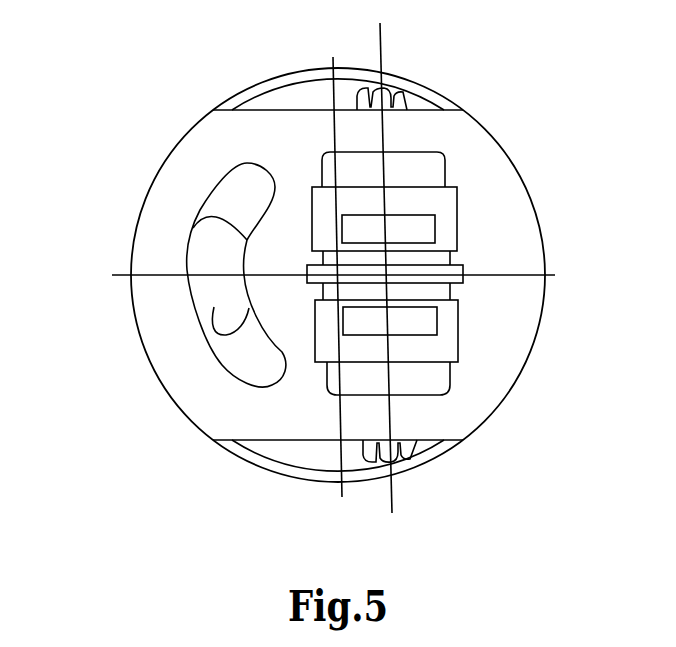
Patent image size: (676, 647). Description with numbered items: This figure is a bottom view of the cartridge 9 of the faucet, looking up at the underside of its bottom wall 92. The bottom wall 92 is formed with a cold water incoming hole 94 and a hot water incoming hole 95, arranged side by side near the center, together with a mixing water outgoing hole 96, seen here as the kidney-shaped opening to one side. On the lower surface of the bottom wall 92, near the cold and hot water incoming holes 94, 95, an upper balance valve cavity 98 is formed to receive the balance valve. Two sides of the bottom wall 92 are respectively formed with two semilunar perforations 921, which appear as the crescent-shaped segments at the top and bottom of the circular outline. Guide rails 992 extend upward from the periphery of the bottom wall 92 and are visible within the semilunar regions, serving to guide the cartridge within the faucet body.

The cartridge 9 is at (108, 185).
The bottom wall 92 is at (492, 310).
The semilunar perforations 921 is at (307, 100).
The guide rail 992 is at (400, 100).
The cold water incoming hole 94 is at (422, 225).
The upper balance valve cavity 98 is at (443, 238).
The hot water incoming hole 95 is at (418, 327).
The mixing water outgoing hole 96 is at (215, 307).